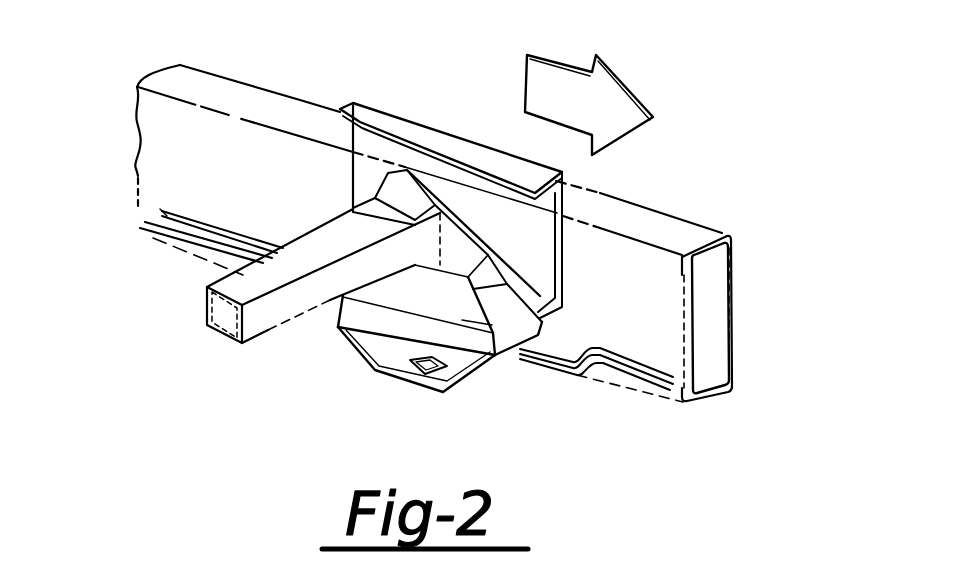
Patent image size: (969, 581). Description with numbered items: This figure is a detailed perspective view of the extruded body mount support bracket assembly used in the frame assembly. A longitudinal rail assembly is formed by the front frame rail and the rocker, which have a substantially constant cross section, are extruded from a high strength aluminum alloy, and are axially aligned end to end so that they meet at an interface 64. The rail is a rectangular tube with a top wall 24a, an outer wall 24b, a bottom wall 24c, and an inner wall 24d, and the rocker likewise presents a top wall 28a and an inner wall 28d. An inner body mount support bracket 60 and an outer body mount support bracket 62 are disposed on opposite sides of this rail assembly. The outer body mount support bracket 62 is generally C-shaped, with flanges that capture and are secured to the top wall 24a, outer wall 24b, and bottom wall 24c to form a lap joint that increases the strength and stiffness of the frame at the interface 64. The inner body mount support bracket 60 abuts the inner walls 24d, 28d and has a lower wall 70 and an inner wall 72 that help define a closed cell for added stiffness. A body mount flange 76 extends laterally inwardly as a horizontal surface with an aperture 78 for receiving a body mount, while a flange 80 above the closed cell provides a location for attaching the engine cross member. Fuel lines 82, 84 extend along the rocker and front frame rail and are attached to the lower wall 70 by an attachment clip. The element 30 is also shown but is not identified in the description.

The top wall 24a is at (670, 233).
The outer wall 24b is at (733, 283).
The bottom wall 24c is at (716, 393).
The inner wall 24d is at (653, 338).
The top wall 28a is at (223, 97).
The inner wall 28d is at (158, 142).
The square rod 30 is at (250, 327).
The inner body mount support bracket 60 is at (369, 398).
The outer body mount support bracket 62 is at (368, 124).
The interface 64 is at (438, 176).
The lower wall 70 is at (556, 364).
The inner wall 72 is at (492, 362).
The body mount flange 76 is at (425, 388).
The aperture 78 is at (408, 365).
The flange 80 is at (377, 206).
The fuel line 82 is at (160, 211).
The fuel line 84 is at (140, 228).